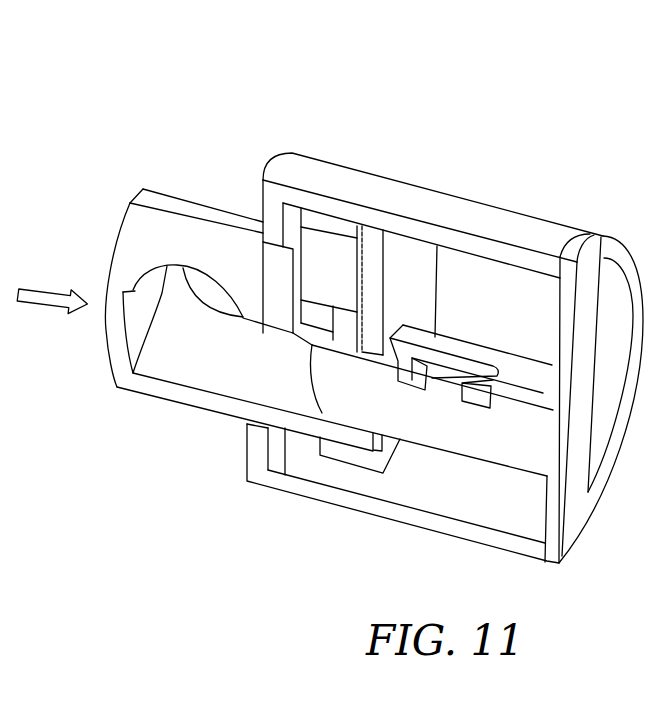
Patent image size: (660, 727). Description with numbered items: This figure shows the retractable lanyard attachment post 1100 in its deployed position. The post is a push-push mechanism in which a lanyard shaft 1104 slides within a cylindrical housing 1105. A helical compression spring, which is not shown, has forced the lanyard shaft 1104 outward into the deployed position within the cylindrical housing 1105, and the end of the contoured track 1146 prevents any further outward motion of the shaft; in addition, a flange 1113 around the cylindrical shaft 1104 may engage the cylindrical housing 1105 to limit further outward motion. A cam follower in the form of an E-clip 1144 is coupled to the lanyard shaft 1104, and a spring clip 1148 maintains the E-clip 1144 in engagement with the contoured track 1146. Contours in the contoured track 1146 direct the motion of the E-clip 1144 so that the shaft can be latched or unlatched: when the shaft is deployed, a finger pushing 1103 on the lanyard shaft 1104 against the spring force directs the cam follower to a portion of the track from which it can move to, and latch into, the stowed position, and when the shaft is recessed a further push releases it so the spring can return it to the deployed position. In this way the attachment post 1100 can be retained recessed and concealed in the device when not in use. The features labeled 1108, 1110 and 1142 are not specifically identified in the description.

The retractable lanyard attachment post 1100 is at (93, 126).
The finger pushing 1103 is at (33, 288).
The lanyard shaft 1104 is at (190, 201).
The cylindrical housing 1105 is at (267, 488).
The curved outer surface with slot 1108 is at (118, 227).
The back wall / partition 1110 is at (430, 281).
The flange 1113 is at (278, 418).
The end plate 1142 is at (578, 507).
The E-clip 1144 is at (338, 313).
The contoured track 1146 is at (403, 360).
The spring clip 1148 is at (328, 228).